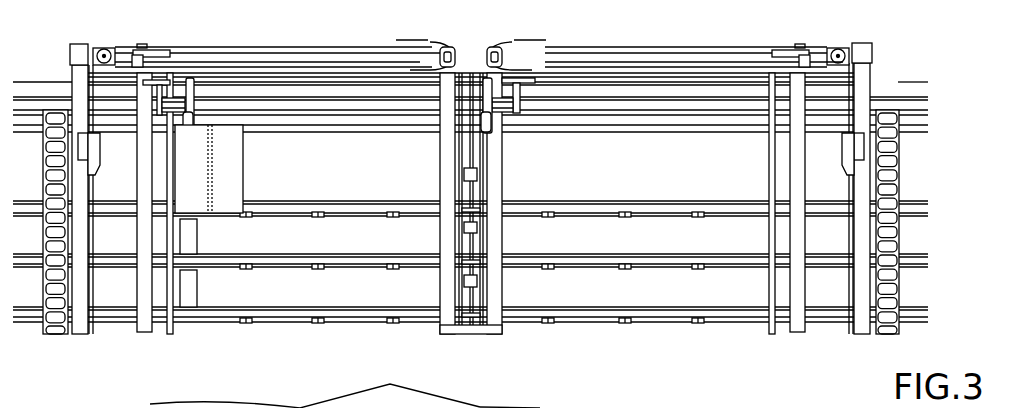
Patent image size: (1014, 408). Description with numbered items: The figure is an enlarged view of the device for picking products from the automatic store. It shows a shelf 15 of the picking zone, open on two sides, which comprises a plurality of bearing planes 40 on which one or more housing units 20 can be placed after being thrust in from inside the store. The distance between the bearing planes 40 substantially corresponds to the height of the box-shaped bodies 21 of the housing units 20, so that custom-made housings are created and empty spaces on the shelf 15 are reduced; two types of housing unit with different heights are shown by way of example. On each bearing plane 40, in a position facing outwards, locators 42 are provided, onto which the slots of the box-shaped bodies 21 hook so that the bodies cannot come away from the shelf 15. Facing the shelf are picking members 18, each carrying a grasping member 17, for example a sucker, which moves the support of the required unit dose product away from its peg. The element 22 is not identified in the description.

The shelf 15 is at (337, 323).
The grasping member 17 is at (200, 110).
The picking member 18 is at (346, 63).
The housing unit 20 is at (207, 404).
The box-shaped body 21 is at (482, 407).
The carrier 22 is at (433, 407).
The bearing plane 40 is at (373, 207).
The locator 42 is at (623, 209).